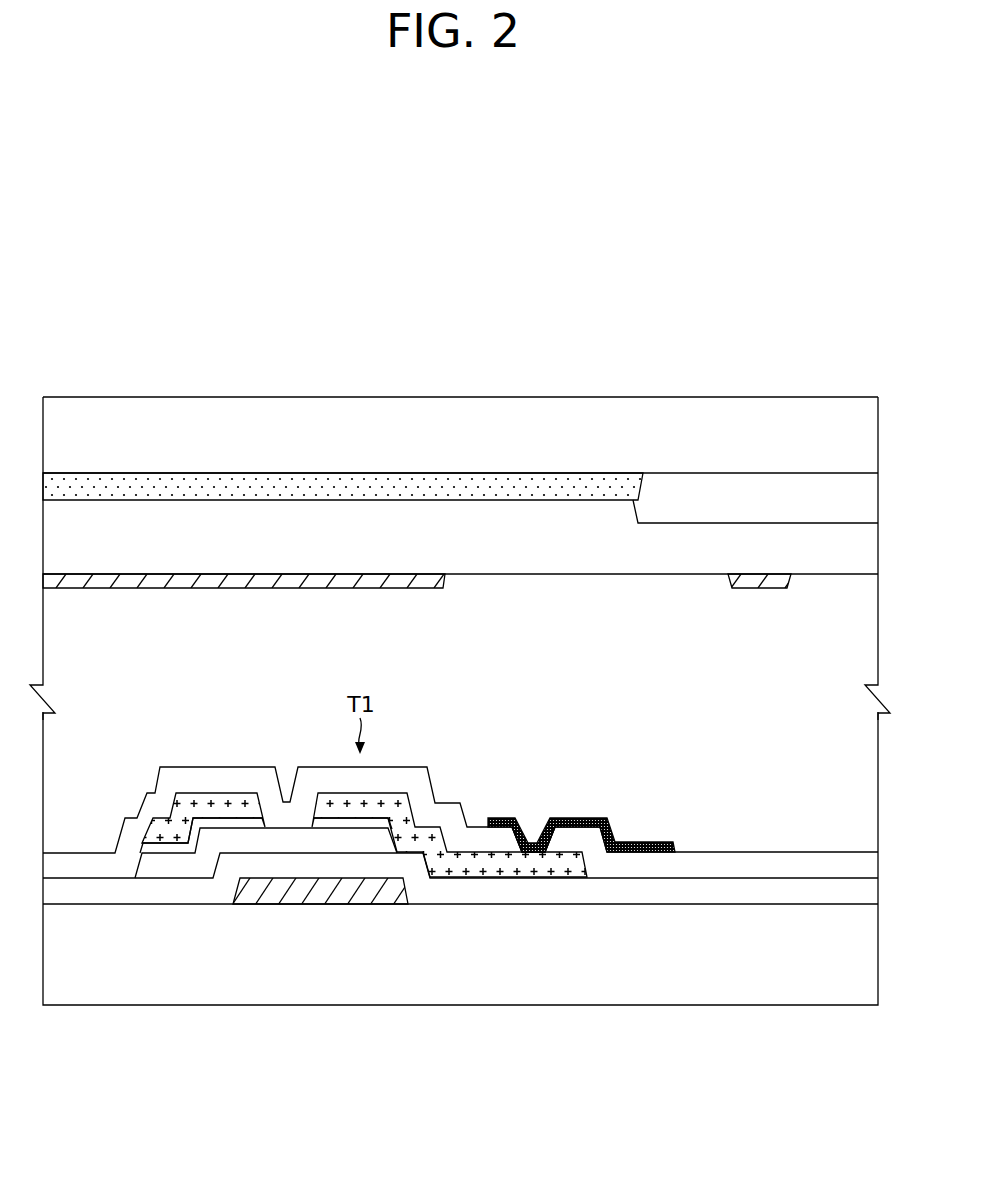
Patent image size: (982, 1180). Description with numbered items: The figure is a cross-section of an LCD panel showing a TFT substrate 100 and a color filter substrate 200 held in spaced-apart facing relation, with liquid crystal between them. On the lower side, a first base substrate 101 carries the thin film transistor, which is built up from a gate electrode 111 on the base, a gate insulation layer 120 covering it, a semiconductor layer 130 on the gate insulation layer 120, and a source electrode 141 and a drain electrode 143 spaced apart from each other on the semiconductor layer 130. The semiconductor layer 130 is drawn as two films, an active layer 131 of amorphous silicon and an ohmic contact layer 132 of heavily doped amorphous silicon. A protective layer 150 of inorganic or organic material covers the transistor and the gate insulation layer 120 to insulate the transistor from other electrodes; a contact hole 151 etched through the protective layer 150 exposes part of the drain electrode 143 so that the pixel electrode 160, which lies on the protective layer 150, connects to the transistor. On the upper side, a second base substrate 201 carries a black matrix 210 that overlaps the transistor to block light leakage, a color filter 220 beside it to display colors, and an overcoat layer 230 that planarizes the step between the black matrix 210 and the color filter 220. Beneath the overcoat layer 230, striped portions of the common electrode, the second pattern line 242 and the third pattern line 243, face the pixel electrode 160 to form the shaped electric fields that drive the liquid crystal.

The TFT substrate 100 is at (485, 1064).
The first base substrate 101 is at (633, 985).
The gate electrode 111 is at (327, 897).
The gate insulation layer 120 is at (448, 893).
The semiconductor layer 130 is at (266, 963).
The active layer 131 is at (200, 863).
The ohmic contact layer 132 is at (178, 850).
The source electrode 141 is at (167, 817).
The drain electrode 143 is at (535, 877).
The protective layer 150 is at (108, 868).
The contact hole 151 is at (533, 826).
The pixel electrode 160 is at (583, 818).
The color filter substrate 200 is at (457, 338).
The second base substrate 201 is at (572, 413).
The black matrix 210 is at (344, 488).
The color filter 220 is at (772, 480).
The overcoat layer 230 is at (143, 510).
The second pattern line 242 is at (757, 587).
The third pattern line 243 is at (241, 582).